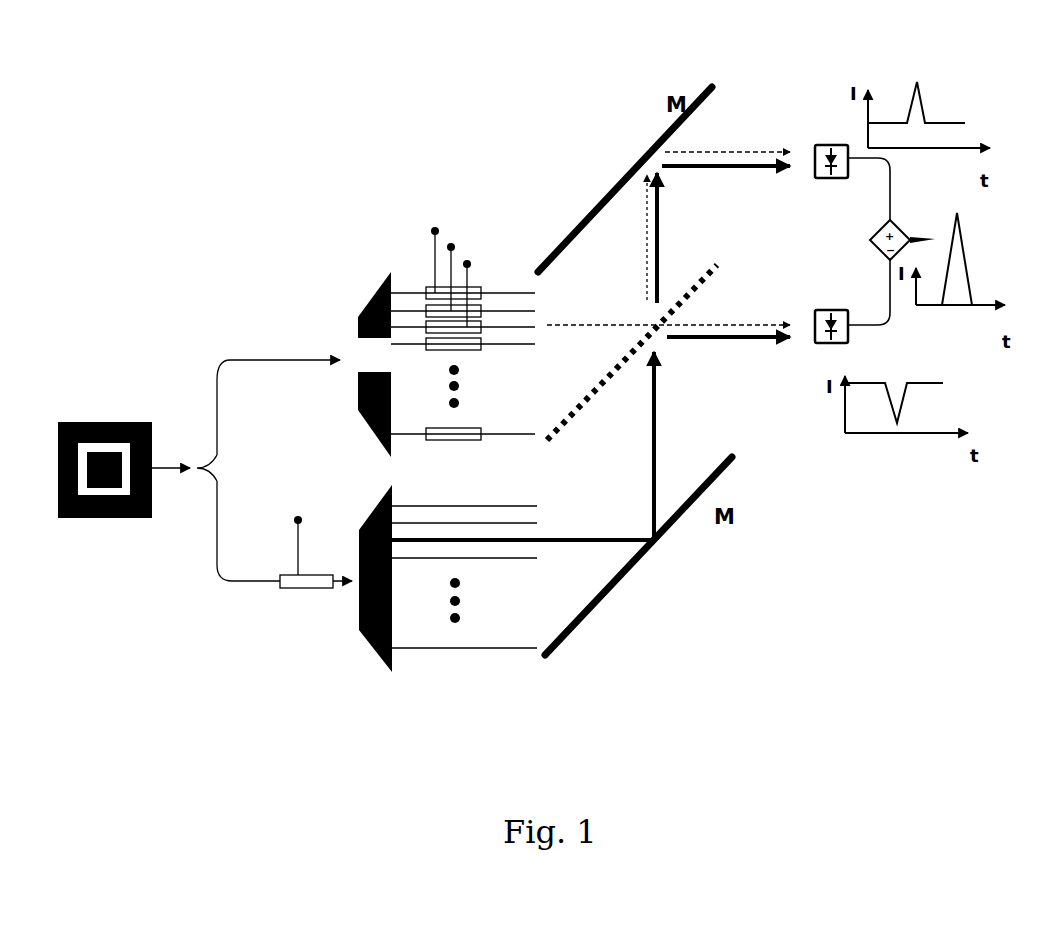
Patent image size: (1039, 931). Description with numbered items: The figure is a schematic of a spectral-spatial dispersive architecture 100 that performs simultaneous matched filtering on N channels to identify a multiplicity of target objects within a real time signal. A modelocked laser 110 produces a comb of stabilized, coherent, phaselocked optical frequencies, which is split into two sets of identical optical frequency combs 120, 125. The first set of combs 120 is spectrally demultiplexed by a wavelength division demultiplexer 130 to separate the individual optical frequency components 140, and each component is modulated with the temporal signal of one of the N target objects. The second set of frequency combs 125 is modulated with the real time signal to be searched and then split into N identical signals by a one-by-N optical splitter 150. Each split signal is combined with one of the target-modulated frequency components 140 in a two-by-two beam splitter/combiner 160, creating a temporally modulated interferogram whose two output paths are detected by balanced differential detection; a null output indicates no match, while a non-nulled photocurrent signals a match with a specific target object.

The spectral-spatial dispersive architecture 100 is at (142, 125).
The modelocked laser 110 is at (118, 405).
The first set of optical frequency combs 120 is at (264, 348).
The second set of optical frequency combs 125 is at (203, 580).
The wavelength division demultiplexer 130 is at (360, 288).
The individual optical frequency components 140 is at (483, 246).
The 1×N optical splitter 150 is at (286, 600).
The beam splitter/combiner 160 is at (683, 360).